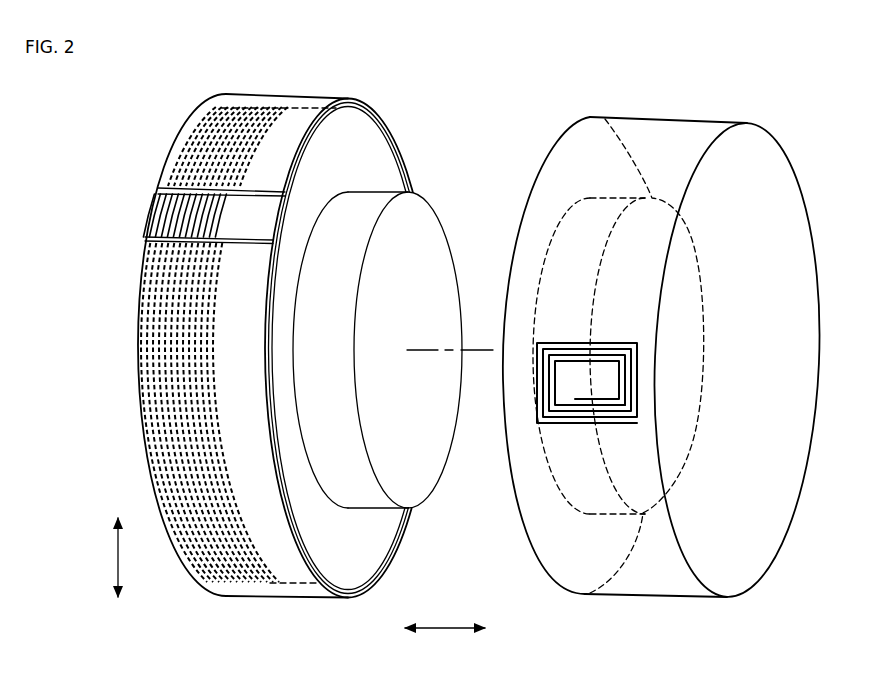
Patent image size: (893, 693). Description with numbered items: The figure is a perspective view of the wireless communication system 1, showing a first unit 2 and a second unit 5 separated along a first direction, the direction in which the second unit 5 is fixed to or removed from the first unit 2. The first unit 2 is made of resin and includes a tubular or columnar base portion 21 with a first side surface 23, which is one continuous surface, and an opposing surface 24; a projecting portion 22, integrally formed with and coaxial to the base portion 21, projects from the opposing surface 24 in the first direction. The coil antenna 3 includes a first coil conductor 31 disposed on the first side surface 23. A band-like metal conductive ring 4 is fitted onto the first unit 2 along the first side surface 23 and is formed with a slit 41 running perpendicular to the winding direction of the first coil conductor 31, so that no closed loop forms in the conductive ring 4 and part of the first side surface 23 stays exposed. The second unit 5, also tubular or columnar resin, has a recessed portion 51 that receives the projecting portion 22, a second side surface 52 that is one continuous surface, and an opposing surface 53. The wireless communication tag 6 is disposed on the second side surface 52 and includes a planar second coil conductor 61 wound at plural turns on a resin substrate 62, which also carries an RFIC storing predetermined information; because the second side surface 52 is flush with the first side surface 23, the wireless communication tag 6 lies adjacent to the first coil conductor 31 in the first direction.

The wireless communication system 1 is at (782, 85).
The first unit 2 is at (442, 112).
The base portion 21 is at (380, 145).
The projecting portion 22 is at (437, 227).
The first side surface 23 is at (298, 122).
The opposing surface 24 is at (368, 537).
The coil antenna 3 is at (183, 344).
The first coil conductor 31 is at (167, 213).
The conductive ring 4 is at (327, 100).
The slit 41 is at (267, 218).
The second unit 5 is at (793, 167).
The recessed portion 51 is at (565, 253).
The second side surface 52 is at (672, 130).
The opposing surface 53 is at (540, 545).
The wireless communication tag 6 is at (555, 305).
The second coil conductor 61 is at (565, 352).
The substrate 62 is at (602, 373).